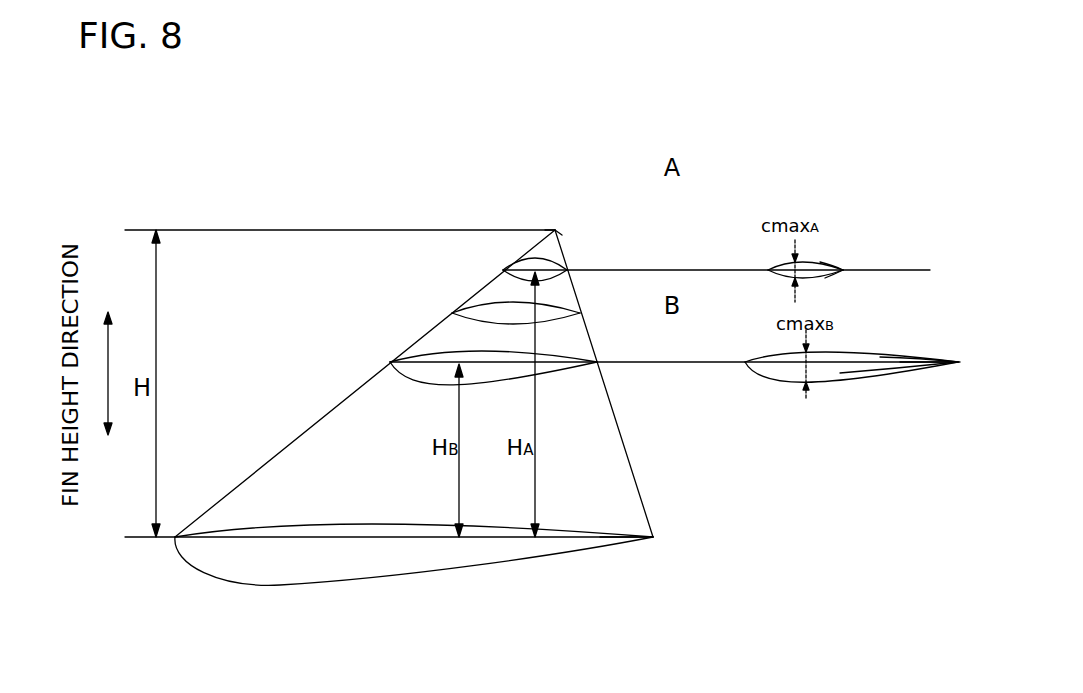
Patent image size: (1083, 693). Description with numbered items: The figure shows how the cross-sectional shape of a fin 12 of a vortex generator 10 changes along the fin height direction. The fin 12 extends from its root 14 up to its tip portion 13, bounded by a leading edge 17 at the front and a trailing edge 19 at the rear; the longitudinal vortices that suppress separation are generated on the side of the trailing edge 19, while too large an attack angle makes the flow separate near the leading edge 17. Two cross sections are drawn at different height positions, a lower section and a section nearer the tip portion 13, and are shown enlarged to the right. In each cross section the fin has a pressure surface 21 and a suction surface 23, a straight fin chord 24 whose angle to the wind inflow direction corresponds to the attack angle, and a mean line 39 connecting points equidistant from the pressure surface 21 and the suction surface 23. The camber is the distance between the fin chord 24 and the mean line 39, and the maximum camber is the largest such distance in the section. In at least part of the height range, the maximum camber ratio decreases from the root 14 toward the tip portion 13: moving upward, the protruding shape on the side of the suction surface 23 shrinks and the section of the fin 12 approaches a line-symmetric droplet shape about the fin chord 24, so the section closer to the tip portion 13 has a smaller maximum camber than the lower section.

The vortex generator 10 is at (139, 130).
The fin 12 is at (572, 237).
The tip portion 13 is at (553, 225).
The root 14 is at (363, 568).
The leading edge 17 is at (238, 486).
The trailing edge 19 is at (652, 517).
The pressure surface 21 is at (337, 422).
The suction surface 23 is at (278, 472).
The fin chord 24 is at (820, 263).
The mean line 39 is at (825, 278).